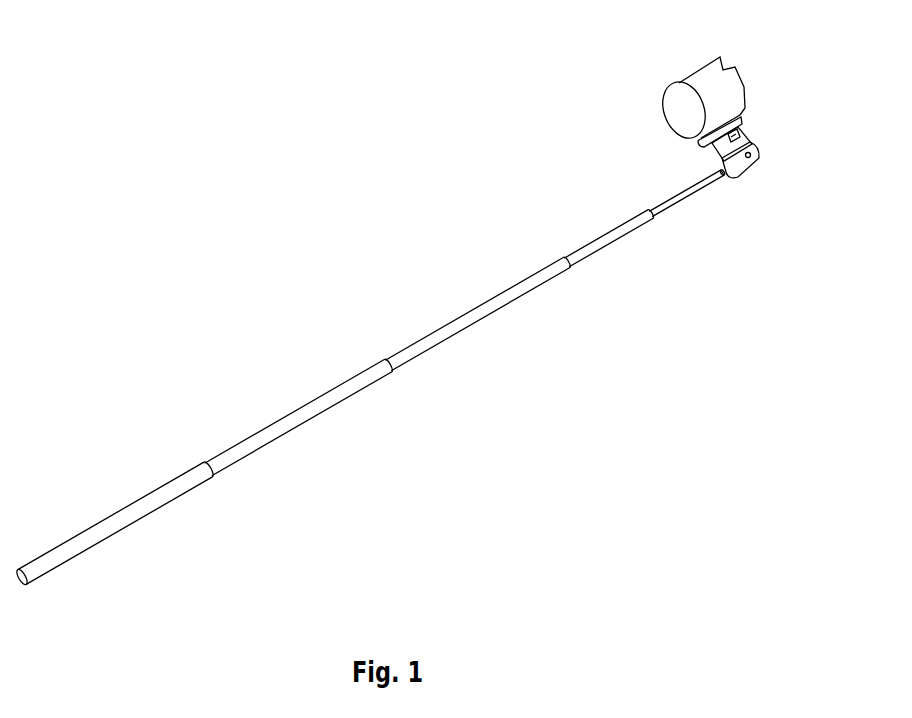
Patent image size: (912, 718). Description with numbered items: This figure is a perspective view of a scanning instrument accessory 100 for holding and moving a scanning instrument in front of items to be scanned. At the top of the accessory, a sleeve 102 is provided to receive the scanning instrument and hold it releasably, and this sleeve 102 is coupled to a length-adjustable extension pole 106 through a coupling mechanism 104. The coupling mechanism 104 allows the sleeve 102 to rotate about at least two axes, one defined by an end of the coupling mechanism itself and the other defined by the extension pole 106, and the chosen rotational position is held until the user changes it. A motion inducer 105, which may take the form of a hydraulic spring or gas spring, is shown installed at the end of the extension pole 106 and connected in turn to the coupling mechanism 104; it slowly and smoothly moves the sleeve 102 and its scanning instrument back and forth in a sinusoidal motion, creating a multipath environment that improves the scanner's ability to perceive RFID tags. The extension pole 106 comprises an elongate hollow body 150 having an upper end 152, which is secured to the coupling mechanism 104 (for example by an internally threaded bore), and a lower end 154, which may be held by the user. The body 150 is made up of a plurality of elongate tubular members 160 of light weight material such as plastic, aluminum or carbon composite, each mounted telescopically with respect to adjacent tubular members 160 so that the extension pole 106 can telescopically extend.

The scanning instrument accessory 100 is at (420, 157).
The sleeve 102 is at (670, 75).
The coupling mechanism 104 is at (712, 145).
The motion inducer 105 is at (754, 177).
The extension pole 106 is at (506, 282).
The elongate hollow body 150 is at (438, 362).
The upper end 152 is at (673, 177).
The lower end 154 is at (109, 483).
The elongate tubular members 160 is at (308, 389).